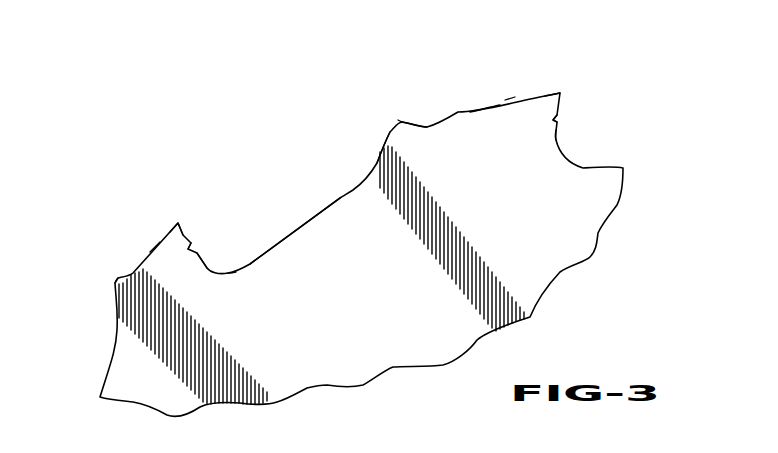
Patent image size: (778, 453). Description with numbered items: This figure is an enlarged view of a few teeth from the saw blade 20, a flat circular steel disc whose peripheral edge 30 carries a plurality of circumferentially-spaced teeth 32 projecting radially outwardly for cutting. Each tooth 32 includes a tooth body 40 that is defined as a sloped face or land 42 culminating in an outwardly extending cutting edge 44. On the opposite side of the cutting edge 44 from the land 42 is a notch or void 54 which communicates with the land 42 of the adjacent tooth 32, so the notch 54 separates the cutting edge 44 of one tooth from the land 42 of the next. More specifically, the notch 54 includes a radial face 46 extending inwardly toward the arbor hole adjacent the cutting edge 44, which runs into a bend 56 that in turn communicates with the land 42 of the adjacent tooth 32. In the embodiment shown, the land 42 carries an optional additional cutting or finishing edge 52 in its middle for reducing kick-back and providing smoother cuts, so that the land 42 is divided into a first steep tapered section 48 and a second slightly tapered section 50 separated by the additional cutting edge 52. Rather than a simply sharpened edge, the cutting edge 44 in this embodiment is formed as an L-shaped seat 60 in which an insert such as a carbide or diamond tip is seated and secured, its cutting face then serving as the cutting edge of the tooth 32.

The saw blade 20 is at (228, 112).
The peripheral edge 30 is at (330, 195).
The tooth 32 is at (127, 252).
The tooth body 40 is at (457, 112).
The land 42 is at (490, 113).
The cutting edge 44 is at (178, 222).
The radial face 46 is at (197, 253).
The first steep tapered section 48 is at (382, 147).
The second slightly tapered section 50 is at (155, 245).
The additional cutting edge 52 is at (115, 283).
The notch 54 is at (318, 218).
The bend 56 is at (229, 273).
The L-shaped seat 60 is at (188, 237).